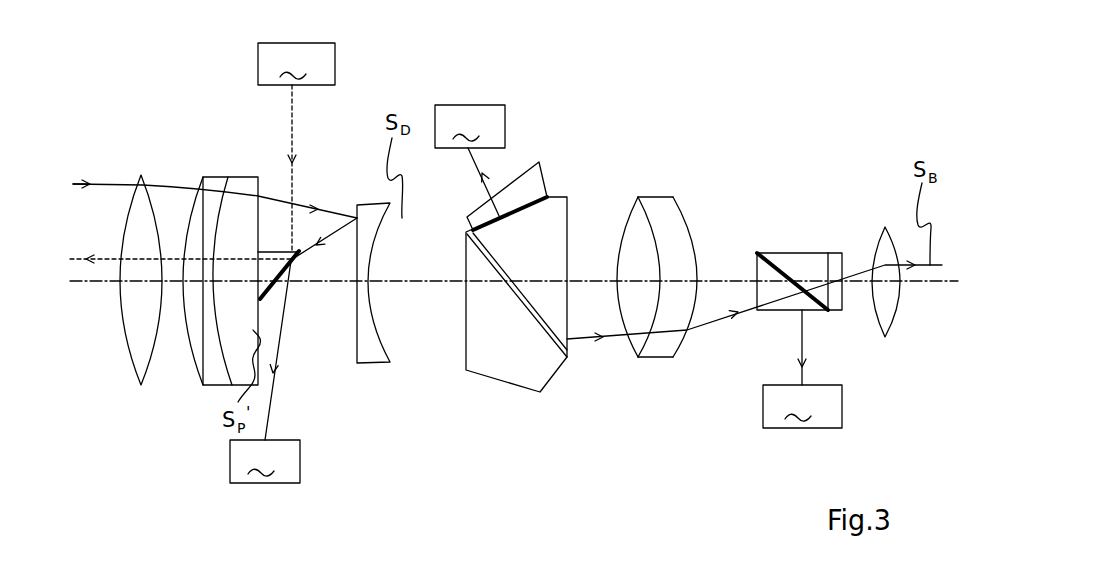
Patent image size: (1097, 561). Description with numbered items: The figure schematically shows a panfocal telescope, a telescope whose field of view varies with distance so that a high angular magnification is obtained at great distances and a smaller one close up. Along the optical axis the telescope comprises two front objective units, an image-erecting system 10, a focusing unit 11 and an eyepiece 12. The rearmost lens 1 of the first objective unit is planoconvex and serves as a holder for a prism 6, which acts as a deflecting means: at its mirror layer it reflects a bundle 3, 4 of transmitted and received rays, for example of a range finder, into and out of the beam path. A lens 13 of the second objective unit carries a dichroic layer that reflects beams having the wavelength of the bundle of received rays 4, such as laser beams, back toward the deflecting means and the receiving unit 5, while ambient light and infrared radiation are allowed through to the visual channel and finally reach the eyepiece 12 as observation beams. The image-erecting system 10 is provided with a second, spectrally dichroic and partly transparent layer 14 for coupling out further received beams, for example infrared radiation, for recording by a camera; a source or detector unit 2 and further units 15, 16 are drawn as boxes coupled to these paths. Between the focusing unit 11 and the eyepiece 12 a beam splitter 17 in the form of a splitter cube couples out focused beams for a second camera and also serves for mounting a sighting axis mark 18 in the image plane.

The lens of the first objective unit 1 is at (240, 183).
The light source 2 is at (296, 64).
The bundle of transmitted rays 3 is at (100, 260).
The bundle of received rays 4 is at (105, 183).
The receiving unit 5 is at (265, 461).
The prism 6 is at (273, 273).
The image-erecting system 10 is at (515, 375).
The focusing unit 11 is at (662, 192).
The eyepiece 12 is at (893, 337).
The lens of the second objective unit 13 is at (370, 357).
The layer 14 is at (530, 203).
The detector 15 is at (470, 161).
The detector 16 is at (802, 369).
The beam splitter 17 is at (788, 262).
The sighting axis mark 18 is at (838, 262).